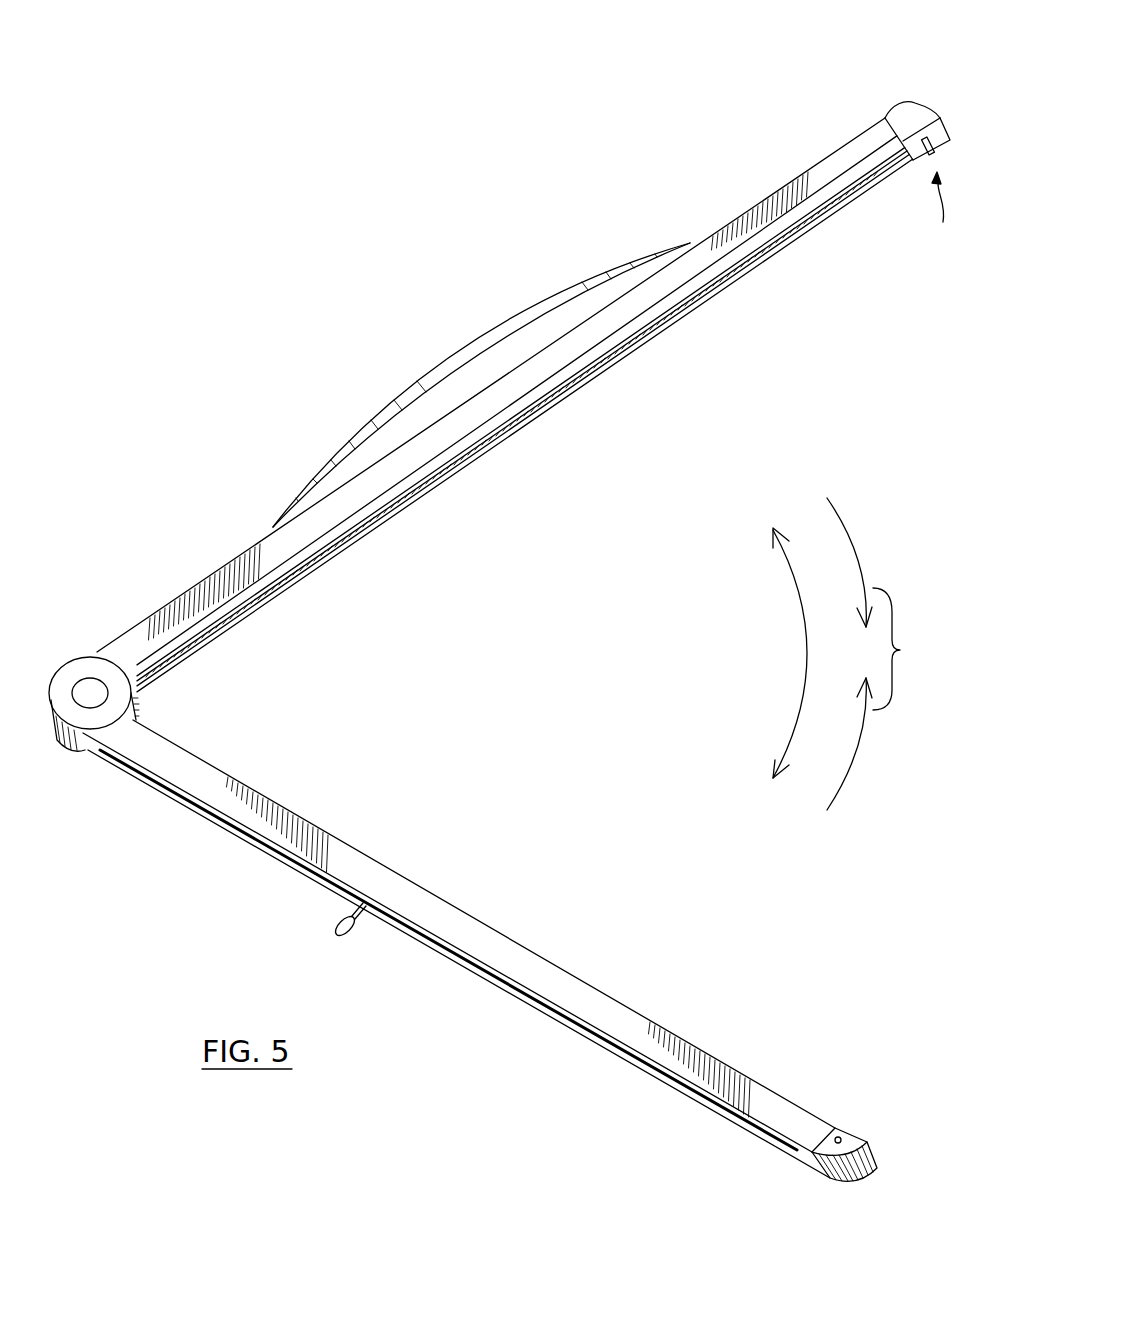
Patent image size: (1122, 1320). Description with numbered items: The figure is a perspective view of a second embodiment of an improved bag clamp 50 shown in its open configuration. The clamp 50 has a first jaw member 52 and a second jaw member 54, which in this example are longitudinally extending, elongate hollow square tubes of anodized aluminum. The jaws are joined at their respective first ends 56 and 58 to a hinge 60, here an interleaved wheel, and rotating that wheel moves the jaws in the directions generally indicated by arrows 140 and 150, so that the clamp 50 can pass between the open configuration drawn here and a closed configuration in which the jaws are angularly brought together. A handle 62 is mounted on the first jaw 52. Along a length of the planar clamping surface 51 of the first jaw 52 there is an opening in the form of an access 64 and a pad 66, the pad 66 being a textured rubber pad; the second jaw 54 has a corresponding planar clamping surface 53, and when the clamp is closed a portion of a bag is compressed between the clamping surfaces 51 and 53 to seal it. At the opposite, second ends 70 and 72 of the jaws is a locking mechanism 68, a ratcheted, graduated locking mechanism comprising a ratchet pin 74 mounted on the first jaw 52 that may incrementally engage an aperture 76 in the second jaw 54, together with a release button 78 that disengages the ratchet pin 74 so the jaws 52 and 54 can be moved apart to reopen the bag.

The bag clamp 50 is at (308, 248).
The clamping surface 51 is at (697, 283).
The first jaw member 52 is at (503, 405).
The clamping surface 53 is at (459, 949).
The second jaw member 54 is at (207, 776).
The first end 56 is at (132, 637).
The first end 58 is at (78, 748).
The hinge 60 is at (66, 658).
The handle 62 is at (461, 350).
The access 64 is at (298, 565).
The pad 66 is at (338, 556).
The locking mechanism 68 is at (940, 213).
The second end 70 is at (902, 102).
The second end 72 is at (871, 1123).
The ratchet pin 74 is at (940, 118).
The aperture 76 is at (865, 1165).
The release button 78 is at (842, 1139).
The arrow 140 is at (805, 652).
The arrow 150 is at (888, 654).